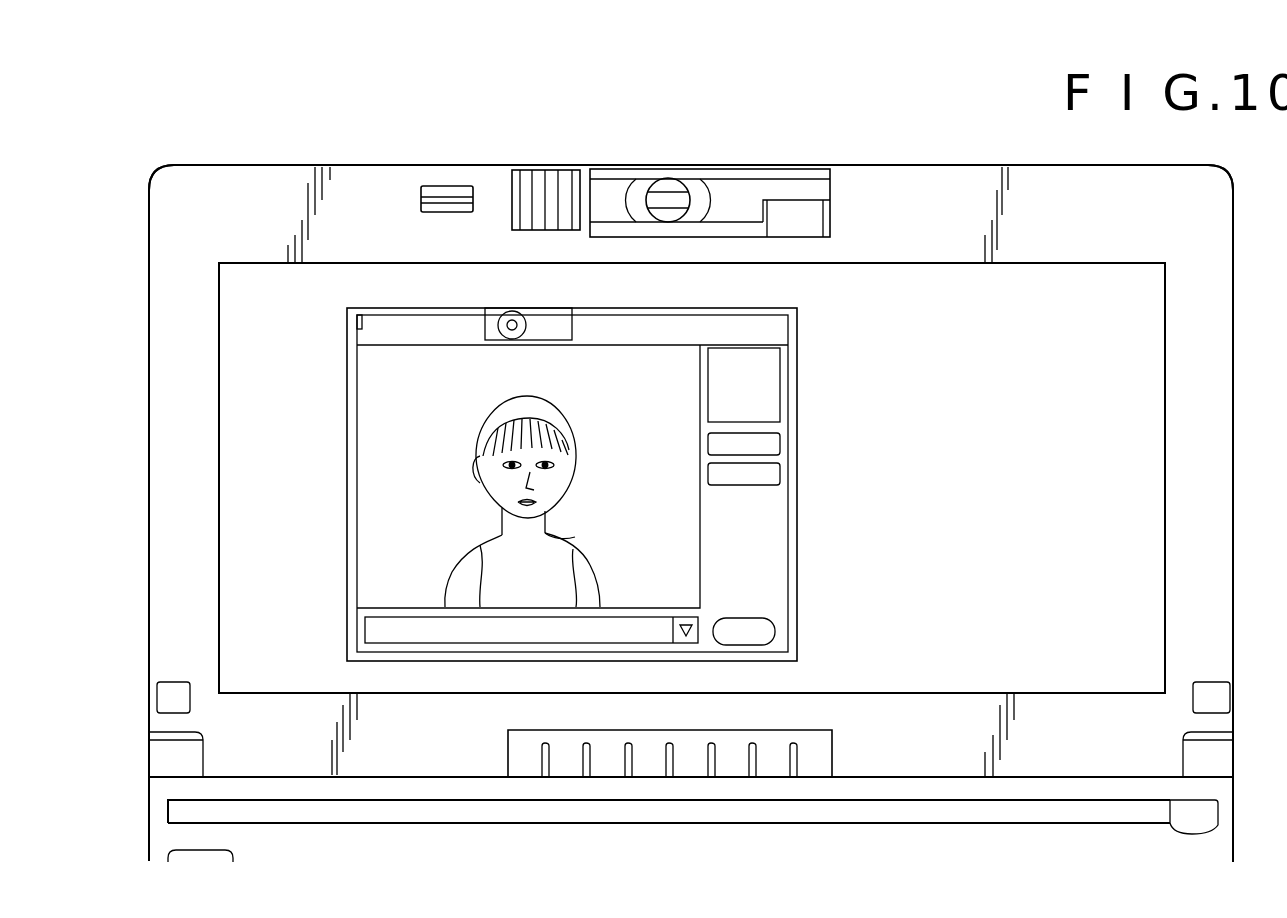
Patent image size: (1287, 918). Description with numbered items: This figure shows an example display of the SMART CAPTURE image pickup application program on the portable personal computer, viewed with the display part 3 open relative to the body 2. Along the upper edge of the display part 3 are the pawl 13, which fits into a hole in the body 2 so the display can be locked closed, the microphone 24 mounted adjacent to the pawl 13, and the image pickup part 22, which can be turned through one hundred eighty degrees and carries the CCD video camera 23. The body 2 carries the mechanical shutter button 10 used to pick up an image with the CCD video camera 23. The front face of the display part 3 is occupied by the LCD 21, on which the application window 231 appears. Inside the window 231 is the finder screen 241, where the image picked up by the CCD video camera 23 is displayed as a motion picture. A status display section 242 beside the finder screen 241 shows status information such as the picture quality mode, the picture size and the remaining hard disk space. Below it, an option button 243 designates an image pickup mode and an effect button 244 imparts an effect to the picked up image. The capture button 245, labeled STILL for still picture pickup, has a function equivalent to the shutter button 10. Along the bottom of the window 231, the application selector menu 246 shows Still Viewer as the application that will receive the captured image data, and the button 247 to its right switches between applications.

The body 2 is at (1220, 848).
The display part 3 is at (149, 285).
The shutter button 10 is at (1195, 828).
The pawl 13 is at (455, 185).
The LCD 21 is at (250, 520).
The image pickup part 22 is at (790, 195).
The CCD video camera 23 is at (672, 192).
The microphone 24 is at (558, 170).
The window 231 is at (347, 405).
The finder screen 241 is at (670, 548).
The status display section 242 is at (762, 364).
The option button 243 is at (781, 442).
The effect button 244 is at (781, 473).
The capture button 245 is at (772, 630).
The application selector menu 246 is at (498, 633).
The button 247 is at (692, 638).